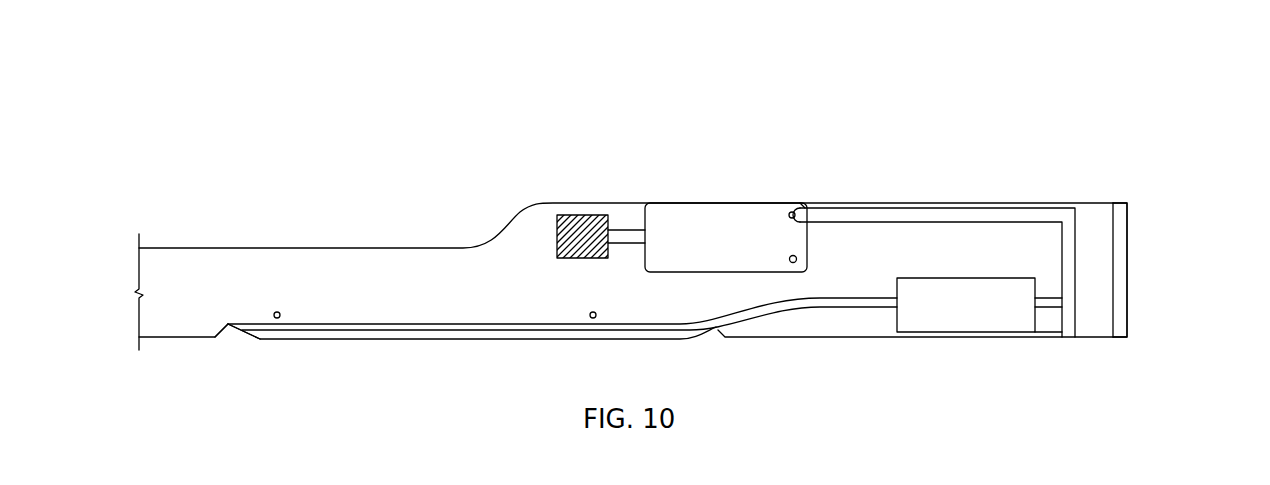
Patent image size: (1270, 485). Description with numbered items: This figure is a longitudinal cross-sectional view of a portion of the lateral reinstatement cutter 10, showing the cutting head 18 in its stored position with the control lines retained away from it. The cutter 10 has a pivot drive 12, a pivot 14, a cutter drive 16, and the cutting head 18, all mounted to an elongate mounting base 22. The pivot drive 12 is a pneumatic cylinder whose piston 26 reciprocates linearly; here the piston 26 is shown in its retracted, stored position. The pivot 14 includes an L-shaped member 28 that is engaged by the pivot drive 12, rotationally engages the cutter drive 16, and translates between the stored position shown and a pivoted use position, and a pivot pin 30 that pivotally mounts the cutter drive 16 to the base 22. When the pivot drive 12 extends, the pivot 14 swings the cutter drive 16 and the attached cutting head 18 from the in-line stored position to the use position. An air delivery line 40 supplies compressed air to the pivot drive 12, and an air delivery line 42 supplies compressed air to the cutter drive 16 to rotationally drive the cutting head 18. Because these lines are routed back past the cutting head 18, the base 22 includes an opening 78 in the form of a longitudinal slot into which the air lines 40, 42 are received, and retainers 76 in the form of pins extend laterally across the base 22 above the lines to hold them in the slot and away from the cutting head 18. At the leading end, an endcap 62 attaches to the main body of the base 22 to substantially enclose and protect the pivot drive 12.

The lateral reinstatement cutter 10 is at (423, 101).
The pivot drive 12 is at (962, 343).
The pivot 14 is at (812, 134).
The cutter drive 16 is at (678, 178).
The cutting head 18 is at (585, 205).
The mounting base 22 is at (198, 233).
The piston 26 is at (1047, 312).
The L-shaped member 28 is at (860, 200).
The pivot pin 30 is at (793, 263).
The air delivery line 40 is at (842, 310).
The air delivery line 42 is at (343, 328).
The endcap 62 is at (1133, 272).
The retainers 76 is at (277, 312).
The opening 78 is at (240, 355).